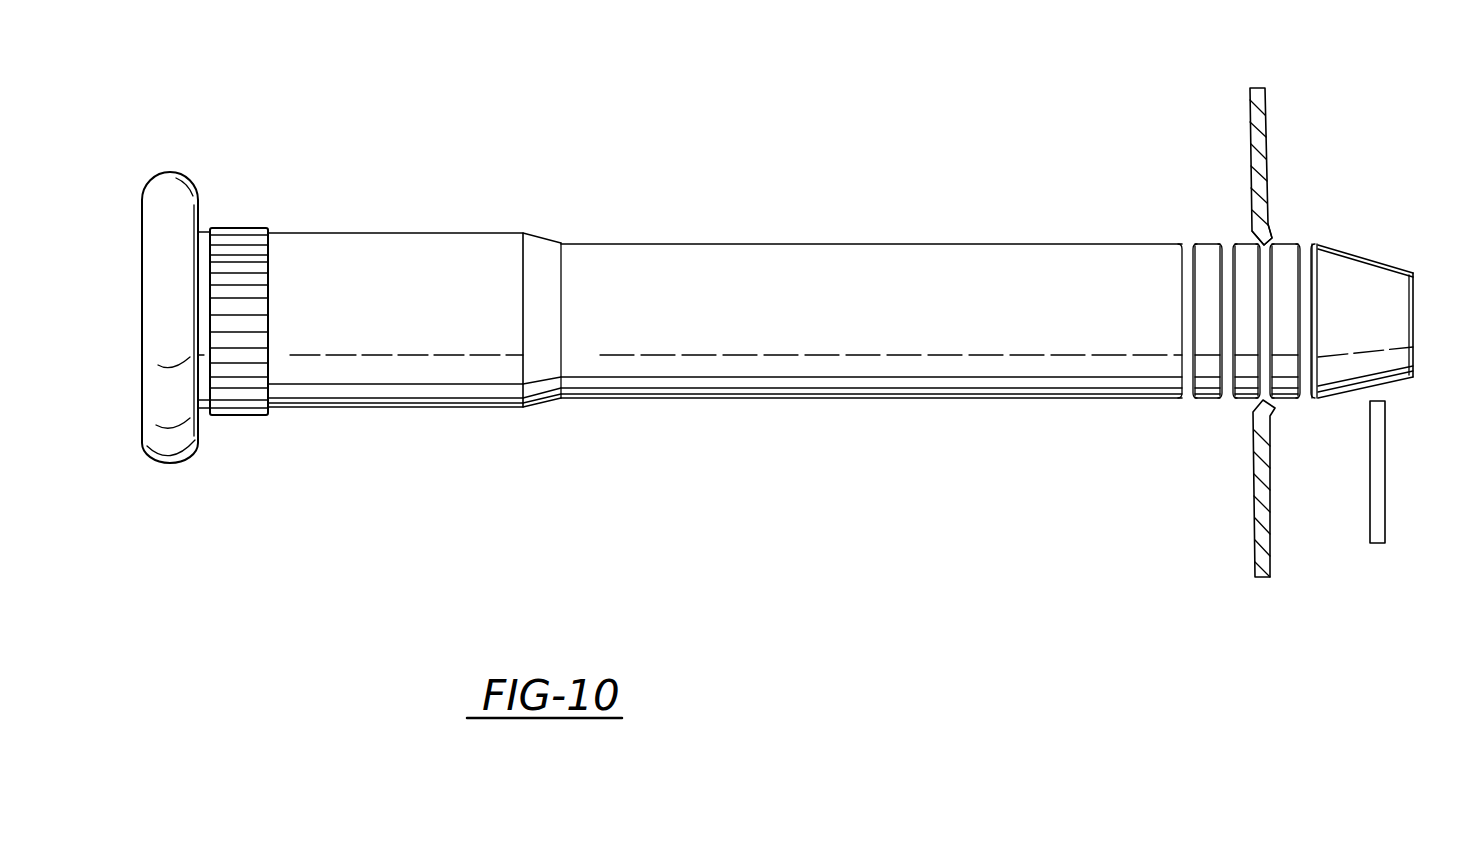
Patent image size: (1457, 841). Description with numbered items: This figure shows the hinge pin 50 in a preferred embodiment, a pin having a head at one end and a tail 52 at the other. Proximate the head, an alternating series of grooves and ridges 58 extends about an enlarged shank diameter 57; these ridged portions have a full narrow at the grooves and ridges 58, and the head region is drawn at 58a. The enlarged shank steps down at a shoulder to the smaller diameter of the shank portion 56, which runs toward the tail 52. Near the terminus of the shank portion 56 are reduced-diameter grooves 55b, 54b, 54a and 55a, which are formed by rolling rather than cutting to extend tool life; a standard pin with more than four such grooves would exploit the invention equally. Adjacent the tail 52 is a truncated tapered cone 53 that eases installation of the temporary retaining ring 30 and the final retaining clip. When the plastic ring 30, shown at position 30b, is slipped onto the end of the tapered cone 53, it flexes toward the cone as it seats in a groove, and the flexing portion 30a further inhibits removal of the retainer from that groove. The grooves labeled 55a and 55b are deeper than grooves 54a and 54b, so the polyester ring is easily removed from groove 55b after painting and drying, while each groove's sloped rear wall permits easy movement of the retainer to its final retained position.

The temporary retaining ring 30 is at (1299, 131).
The flexing portion 30a is at (1272, 230).
The ring position 30b is at (1387, 532).
The hinge pin 50 is at (1283, 552).
The tail 52 is at (1428, 262).
The truncated tapered cone 53 is at (1364, 258).
The groove 54a is at (1285, 402).
The groove 54b is at (1190, 395).
The groove 55a is at (1307, 400).
The groove 55b is at (1228, 395).
The shank portion 56 is at (808, 383).
The enlarged shank diameter 57 is at (417, 391).
The grooves and ridges 58 is at (258, 232).
The handle cap 58a is at (205, 228).